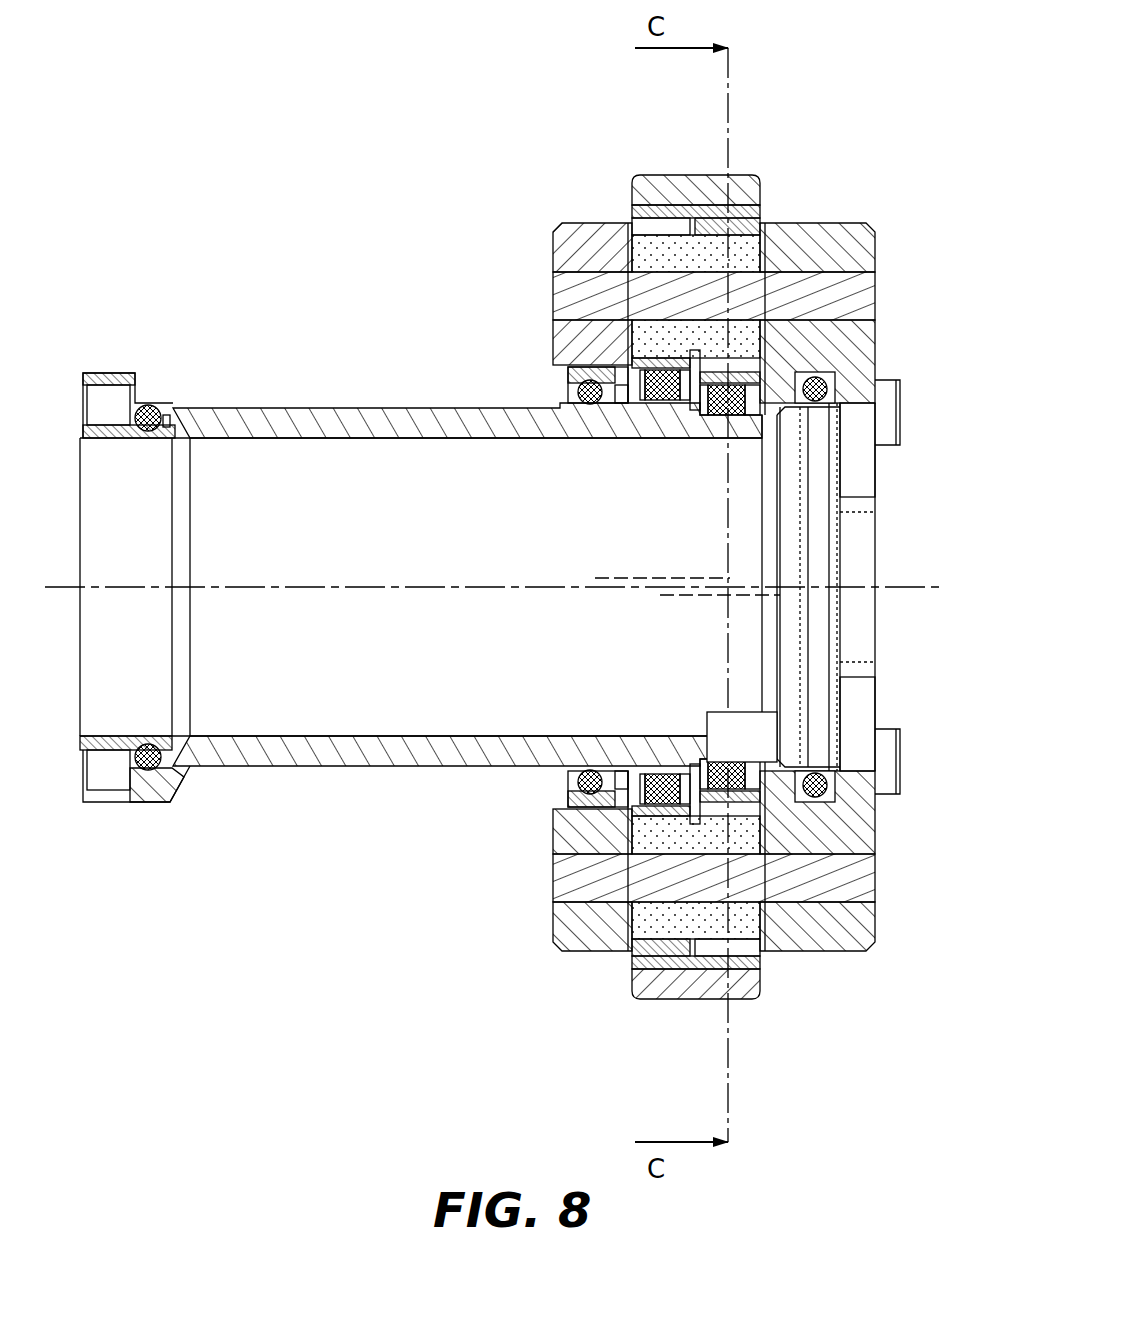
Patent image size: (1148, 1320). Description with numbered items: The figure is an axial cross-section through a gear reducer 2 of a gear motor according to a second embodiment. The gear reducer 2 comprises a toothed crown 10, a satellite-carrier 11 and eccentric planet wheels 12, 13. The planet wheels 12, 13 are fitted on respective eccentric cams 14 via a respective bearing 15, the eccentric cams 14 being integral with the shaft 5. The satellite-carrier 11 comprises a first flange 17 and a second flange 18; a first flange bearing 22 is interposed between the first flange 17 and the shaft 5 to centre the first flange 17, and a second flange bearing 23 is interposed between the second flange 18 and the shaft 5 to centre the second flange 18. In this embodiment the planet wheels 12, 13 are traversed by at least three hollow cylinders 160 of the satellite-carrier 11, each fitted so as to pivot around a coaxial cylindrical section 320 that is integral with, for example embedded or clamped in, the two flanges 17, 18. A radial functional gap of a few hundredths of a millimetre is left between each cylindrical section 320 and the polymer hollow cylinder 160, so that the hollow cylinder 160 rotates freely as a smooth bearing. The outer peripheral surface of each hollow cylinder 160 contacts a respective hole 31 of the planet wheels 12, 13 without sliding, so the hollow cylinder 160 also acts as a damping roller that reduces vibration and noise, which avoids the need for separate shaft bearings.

The gear reducer 2 is at (476, 147).
The shaft 5 is at (305, 425).
The toothed crown 10 is at (711, 525).
The satellite-carrier 11 is at (666, 583).
The eccentric planet wheel 12 is at (647, 215).
The eccentric planet wheel 13 is at (747, 225).
The eccentric cam 14 is at (665, 405).
The bearing 15 is at (662, 397).
The first flange 17 is at (590, 240).
The second flange 18 is at (855, 245).
The first flange bearing 22 is at (577, 405).
The second flange bearing 23 is at (805, 768).
The hole 31 is at (670, 225).
The hollow cylinder 160 is at (745, 245).
The cylindrical section 320 is at (567, 293).